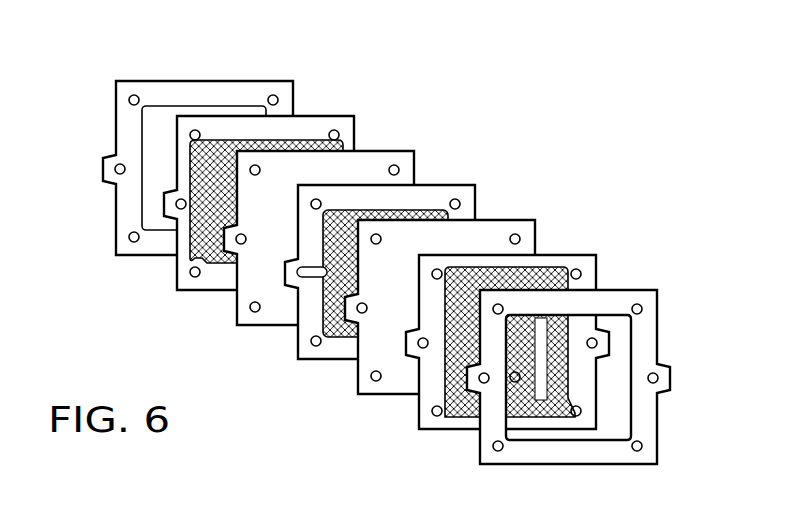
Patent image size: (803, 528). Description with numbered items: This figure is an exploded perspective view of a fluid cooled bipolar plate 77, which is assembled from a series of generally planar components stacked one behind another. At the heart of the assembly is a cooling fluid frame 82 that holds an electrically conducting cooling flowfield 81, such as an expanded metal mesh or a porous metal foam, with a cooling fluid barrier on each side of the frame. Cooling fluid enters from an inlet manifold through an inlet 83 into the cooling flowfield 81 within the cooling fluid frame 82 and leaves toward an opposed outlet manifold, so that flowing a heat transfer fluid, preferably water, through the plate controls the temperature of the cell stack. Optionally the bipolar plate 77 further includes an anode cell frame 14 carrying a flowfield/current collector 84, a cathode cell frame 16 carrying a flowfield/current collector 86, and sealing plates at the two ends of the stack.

The fluid cooled bipolar plate 77 is at (592, 114).
The anode cell frame 14 is at (241, 192).
The cooling fluid frame 82 is at (330, 265).
The flowfield/current collector 84 is at (213, 228).
The inlet 83 is at (286, 274).
The cooling flowfield 81 is at (323, 316).
The cathode cell frame 16 is at (485, 332).
The flowfield/current collector 86 is at (453, 356).